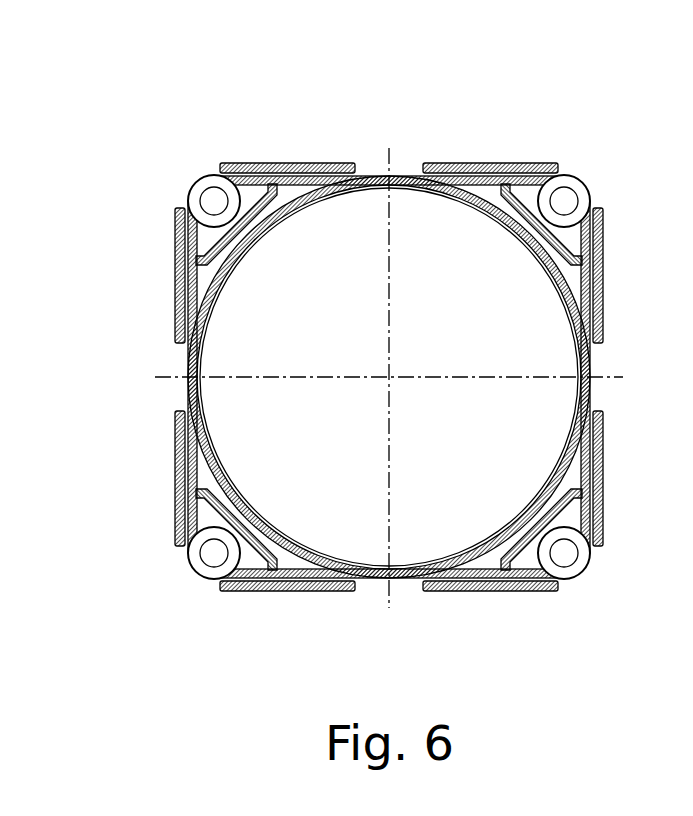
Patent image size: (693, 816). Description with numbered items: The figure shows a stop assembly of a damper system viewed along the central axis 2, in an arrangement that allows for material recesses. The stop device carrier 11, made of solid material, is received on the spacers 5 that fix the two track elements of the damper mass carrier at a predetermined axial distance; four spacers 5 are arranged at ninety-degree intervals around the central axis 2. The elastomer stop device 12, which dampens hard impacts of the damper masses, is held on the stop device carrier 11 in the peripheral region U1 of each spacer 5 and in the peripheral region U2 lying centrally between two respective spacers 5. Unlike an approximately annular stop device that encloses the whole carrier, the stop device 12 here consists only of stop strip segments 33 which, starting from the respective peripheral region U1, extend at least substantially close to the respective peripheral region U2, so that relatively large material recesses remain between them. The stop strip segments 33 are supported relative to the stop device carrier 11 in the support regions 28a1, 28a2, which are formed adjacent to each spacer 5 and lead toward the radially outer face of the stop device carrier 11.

The central axis 2 is at (390, 375).
The spacer 5 is at (197, 193).
The stop device carrier 11 is at (257, 238).
The stop device 12 is at (595, 207).
The support region 28a1 is at (251, 198).
The support region 28a2 is at (298, 190).
The stop strip segment 33 is at (322, 162).
The peripheral region of a spacer U1 is at (212, 201).
The peripheral region between two spacers U2 is at (407, 175).